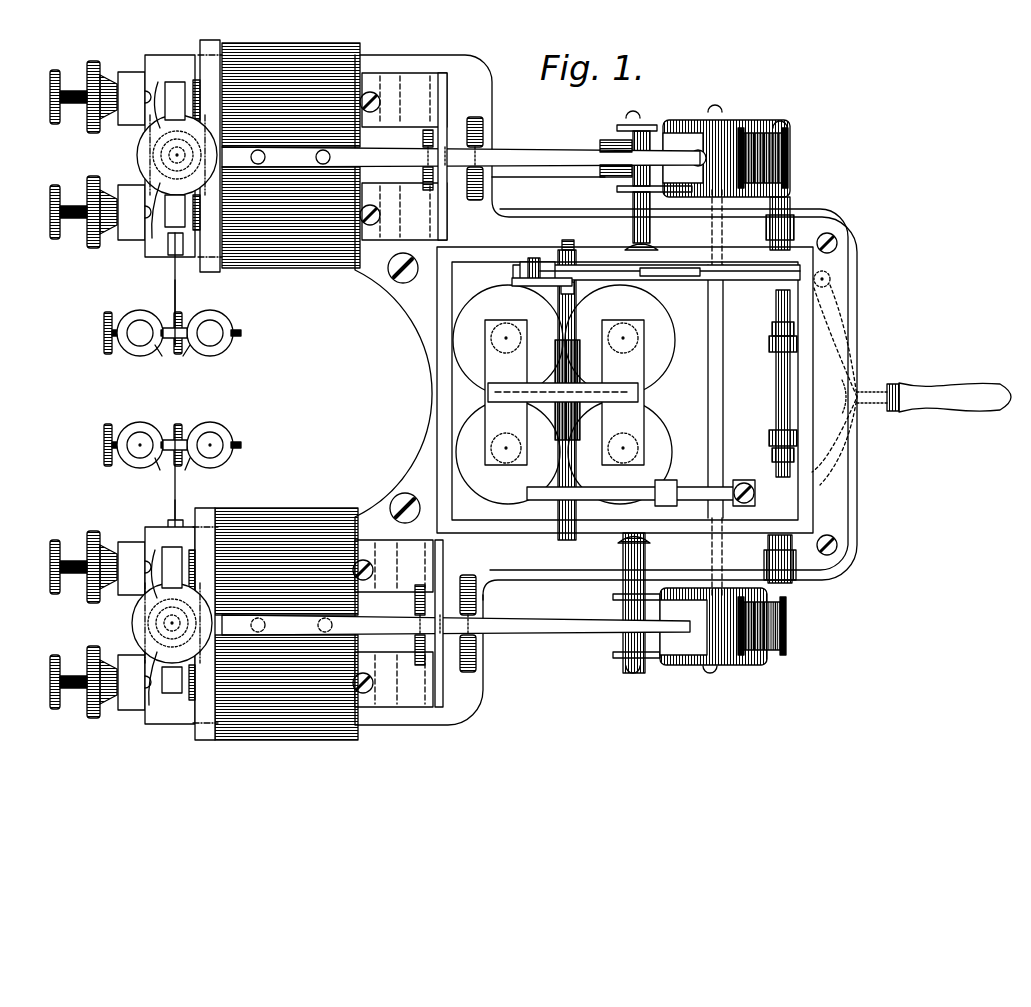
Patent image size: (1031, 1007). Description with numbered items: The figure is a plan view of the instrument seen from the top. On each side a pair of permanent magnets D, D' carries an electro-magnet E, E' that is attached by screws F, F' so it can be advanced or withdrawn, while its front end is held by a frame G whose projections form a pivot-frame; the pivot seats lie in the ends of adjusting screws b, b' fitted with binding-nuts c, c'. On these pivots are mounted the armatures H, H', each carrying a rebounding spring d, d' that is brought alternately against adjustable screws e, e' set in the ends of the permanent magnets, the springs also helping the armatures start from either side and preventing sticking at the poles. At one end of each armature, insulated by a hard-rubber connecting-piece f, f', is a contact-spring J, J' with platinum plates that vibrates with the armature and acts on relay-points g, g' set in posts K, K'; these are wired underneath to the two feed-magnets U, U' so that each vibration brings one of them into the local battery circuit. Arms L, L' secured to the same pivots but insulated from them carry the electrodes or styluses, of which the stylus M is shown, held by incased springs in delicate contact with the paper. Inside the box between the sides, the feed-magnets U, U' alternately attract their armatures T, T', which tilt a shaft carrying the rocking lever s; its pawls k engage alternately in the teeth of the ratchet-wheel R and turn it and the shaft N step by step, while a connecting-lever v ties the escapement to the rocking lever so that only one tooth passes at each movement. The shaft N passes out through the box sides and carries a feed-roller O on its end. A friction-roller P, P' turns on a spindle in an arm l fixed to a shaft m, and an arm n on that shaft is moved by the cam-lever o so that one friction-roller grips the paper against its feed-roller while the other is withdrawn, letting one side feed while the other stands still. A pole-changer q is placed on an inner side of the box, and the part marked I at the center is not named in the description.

The screw e is at (72, 154).
The screw e' is at (72, 624).
The permanent magnet D is at (300, 156).
The permanent magnet D' is at (297, 625).
The rebounding spring d is at (155, 160).
The rebounding spring d' is at (156, 627).
The armature H is at (175, 154).
The armature H' is at (172, 620).
The binding-nut c is at (157, 156).
The binding-nut c' is at (156, 625).
The screw b is at (177, 155).
The screw b' is at (175, 624).
The frame G is at (207, 156).
The electro-magnet E is at (291, 156).
The electro-magnet E' is at (286, 624).
The connecting-piece f is at (175, 289).
The connecting-piece f' is at (182, 513).
The contact-spring J is at (175, 312).
The contact-spring J' is at (167, 472).
The post K is at (347, 390).
The post K' is at (172, 436).
The relay-point g is at (172, 359).
The relay-point g' is at (173, 473).
The screw F is at (606, 390).
The screw F' is at (469, 582).
The arm L is at (461, 158).
The arm L' is at (456, 625).
The pawl k is at (637, 360).
The electrode or stylus M is at (680, 382).
The feed-roller O is at (846, 381).
The friction-roller P is at (714, 177).
The friction-roller P' is at (711, 603).
The arm l is at (780, 219).
The connecting-lever v is at (656, 265).
The rocking lever s is at (542, 291).
The pole-changer q is at (641, 499).
The feed-magnet U is at (508, 394).
The feed-magnet U' is at (620, 394).
The armature T is at (506, 392).
The armature T' is at (623, 392).
The ratchet-wheel R is at (625, 390).
The shaft N is at (725, 391).
The shaft m is at (771, 387).
The arm n is at (772, 391).
The cam-lever o is at (834, 378).
The cross bar I is at (563, 394).